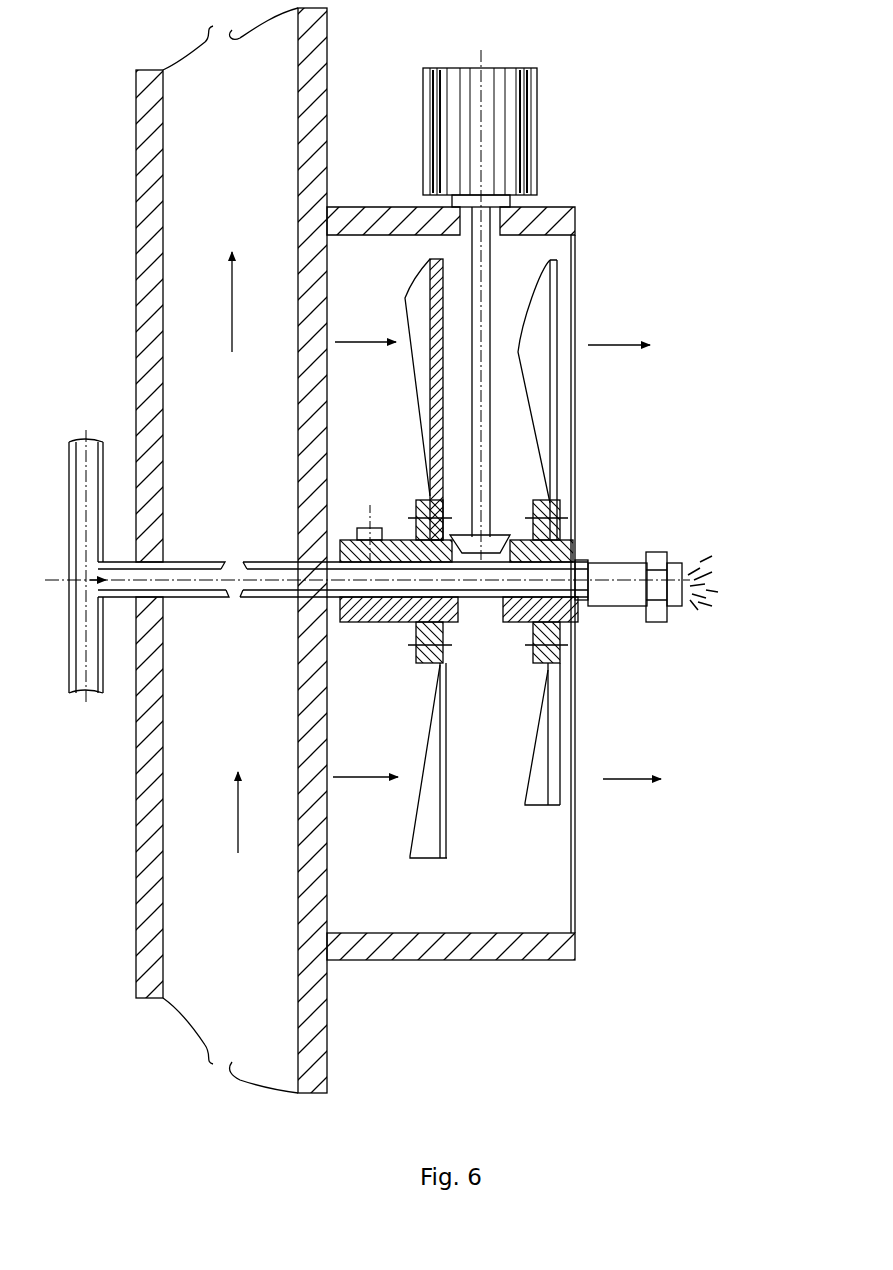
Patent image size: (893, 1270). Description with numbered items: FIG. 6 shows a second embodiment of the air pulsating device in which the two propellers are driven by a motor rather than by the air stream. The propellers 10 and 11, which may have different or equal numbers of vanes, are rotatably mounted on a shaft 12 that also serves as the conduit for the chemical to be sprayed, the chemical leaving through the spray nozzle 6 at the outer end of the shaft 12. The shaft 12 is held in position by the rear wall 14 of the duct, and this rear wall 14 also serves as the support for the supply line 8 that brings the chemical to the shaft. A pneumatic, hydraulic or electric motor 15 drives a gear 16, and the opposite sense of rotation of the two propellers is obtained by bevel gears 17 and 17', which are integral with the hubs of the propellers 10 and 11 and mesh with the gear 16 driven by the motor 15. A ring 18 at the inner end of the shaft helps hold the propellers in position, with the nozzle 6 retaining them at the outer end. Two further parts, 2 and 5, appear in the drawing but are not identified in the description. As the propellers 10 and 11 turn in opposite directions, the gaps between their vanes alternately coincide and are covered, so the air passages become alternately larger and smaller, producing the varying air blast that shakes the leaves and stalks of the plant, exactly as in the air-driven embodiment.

The wall 2 is at (318, 1034).
The housing plate 5 is at (547, 955).
The spray nozzle 6 is at (615, 597).
The supply line 8 is at (84, 650).
The propeller 10 is at (556, 793).
The propeller 11 is at (446, 853).
The shaft 12 is at (288, 597).
The rear wall of the duct 14 is at (152, 956).
The motor 15 is at (520, 137).
The gear 16 is at (500, 535).
The bevel gear 17 is at (526, 596).
The bevel gear 17' is at (451, 622).
The ring 18 is at (373, 620).